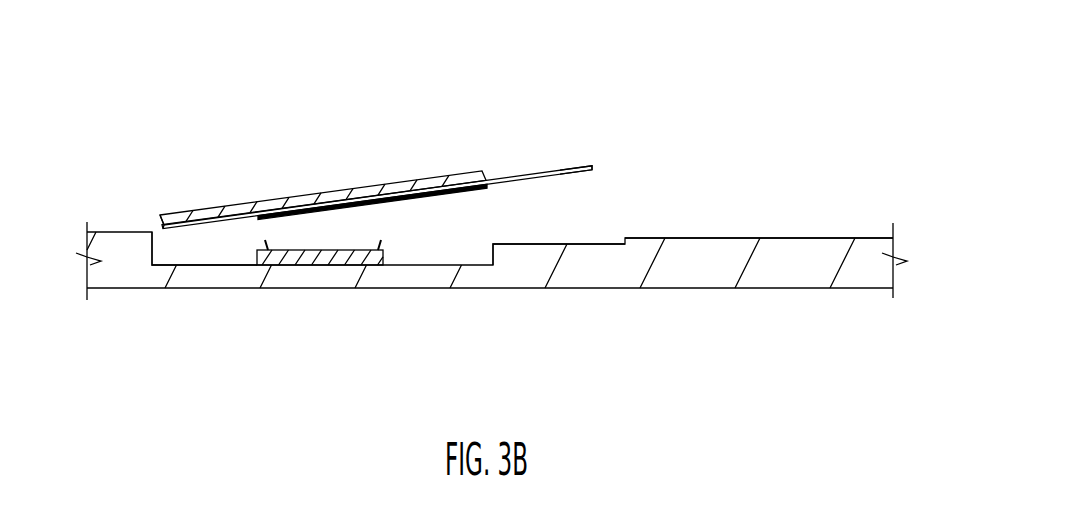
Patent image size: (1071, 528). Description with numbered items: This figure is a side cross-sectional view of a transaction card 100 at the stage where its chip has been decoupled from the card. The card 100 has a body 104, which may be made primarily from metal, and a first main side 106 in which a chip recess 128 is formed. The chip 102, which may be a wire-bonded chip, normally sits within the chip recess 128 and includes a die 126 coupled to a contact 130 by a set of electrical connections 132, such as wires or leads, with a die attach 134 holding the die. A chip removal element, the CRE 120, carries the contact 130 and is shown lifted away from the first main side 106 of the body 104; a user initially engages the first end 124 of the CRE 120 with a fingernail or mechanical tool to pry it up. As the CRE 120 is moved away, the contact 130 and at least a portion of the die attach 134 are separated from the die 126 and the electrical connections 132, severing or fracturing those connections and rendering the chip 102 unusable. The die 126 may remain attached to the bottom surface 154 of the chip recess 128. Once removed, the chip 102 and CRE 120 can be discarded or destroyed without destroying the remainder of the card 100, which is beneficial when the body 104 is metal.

The card 100 is at (679, 106).
The chip 102 is at (377, 169).
The body 104 is at (732, 265).
The first main side 106 is at (805, 237).
The CRE 120 is at (530, 172).
The first end 124 is at (590, 170).
The die 126 is at (328, 257).
The chip recess 128 is at (212, 246).
The contact 130 is at (177, 221).
The set of electrical connections 132 is at (383, 247).
The die attach 134 is at (368, 200).
The bottom surface 154 is at (472, 262).